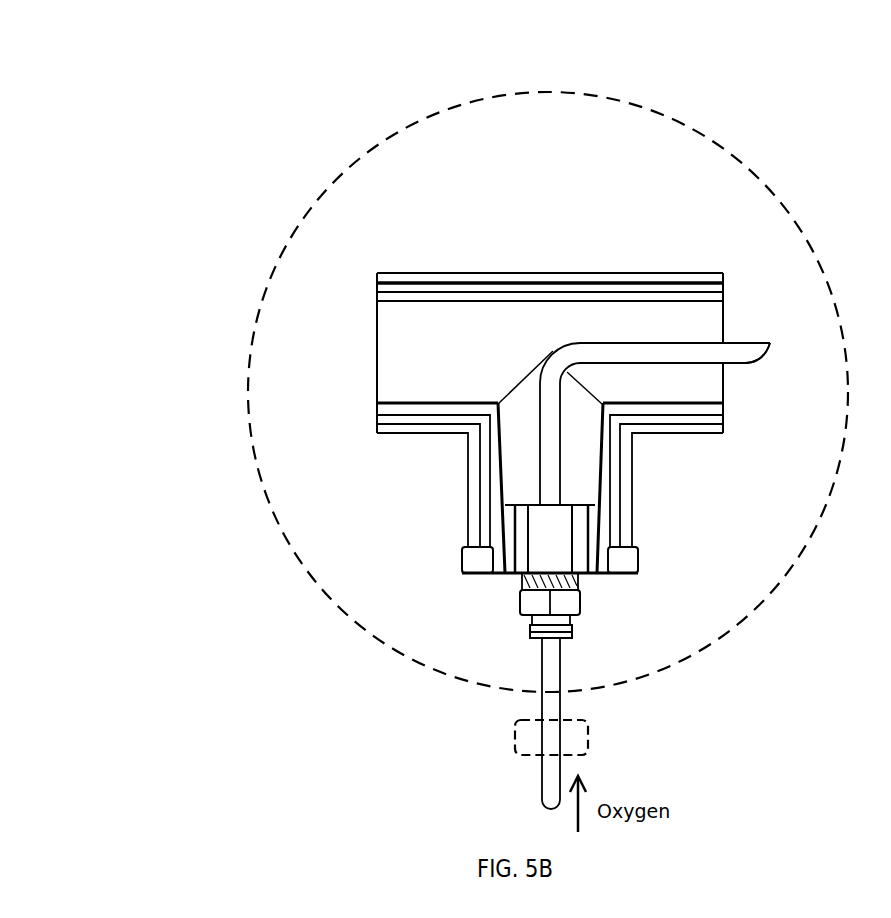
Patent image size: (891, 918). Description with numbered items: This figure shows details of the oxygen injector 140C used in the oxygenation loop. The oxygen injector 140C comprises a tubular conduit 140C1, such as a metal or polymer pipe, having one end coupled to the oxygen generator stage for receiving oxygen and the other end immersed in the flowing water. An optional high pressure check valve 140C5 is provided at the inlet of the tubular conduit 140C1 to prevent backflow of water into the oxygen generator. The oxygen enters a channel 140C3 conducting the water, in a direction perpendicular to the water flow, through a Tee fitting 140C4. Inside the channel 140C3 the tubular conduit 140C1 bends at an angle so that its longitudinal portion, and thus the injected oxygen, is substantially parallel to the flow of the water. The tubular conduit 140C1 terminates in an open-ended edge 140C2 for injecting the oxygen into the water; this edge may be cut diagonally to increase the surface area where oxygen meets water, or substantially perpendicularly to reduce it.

The oxygen injector 140C is at (95, 86).
The tubular conduit 140C1 is at (642, 353).
The open-ended edge 140C2 is at (762, 350).
The channel 140C3 is at (403, 370).
The Tee fitting 140C4 is at (423, 275).
The high pressure check valve 140C5 is at (508, 740).